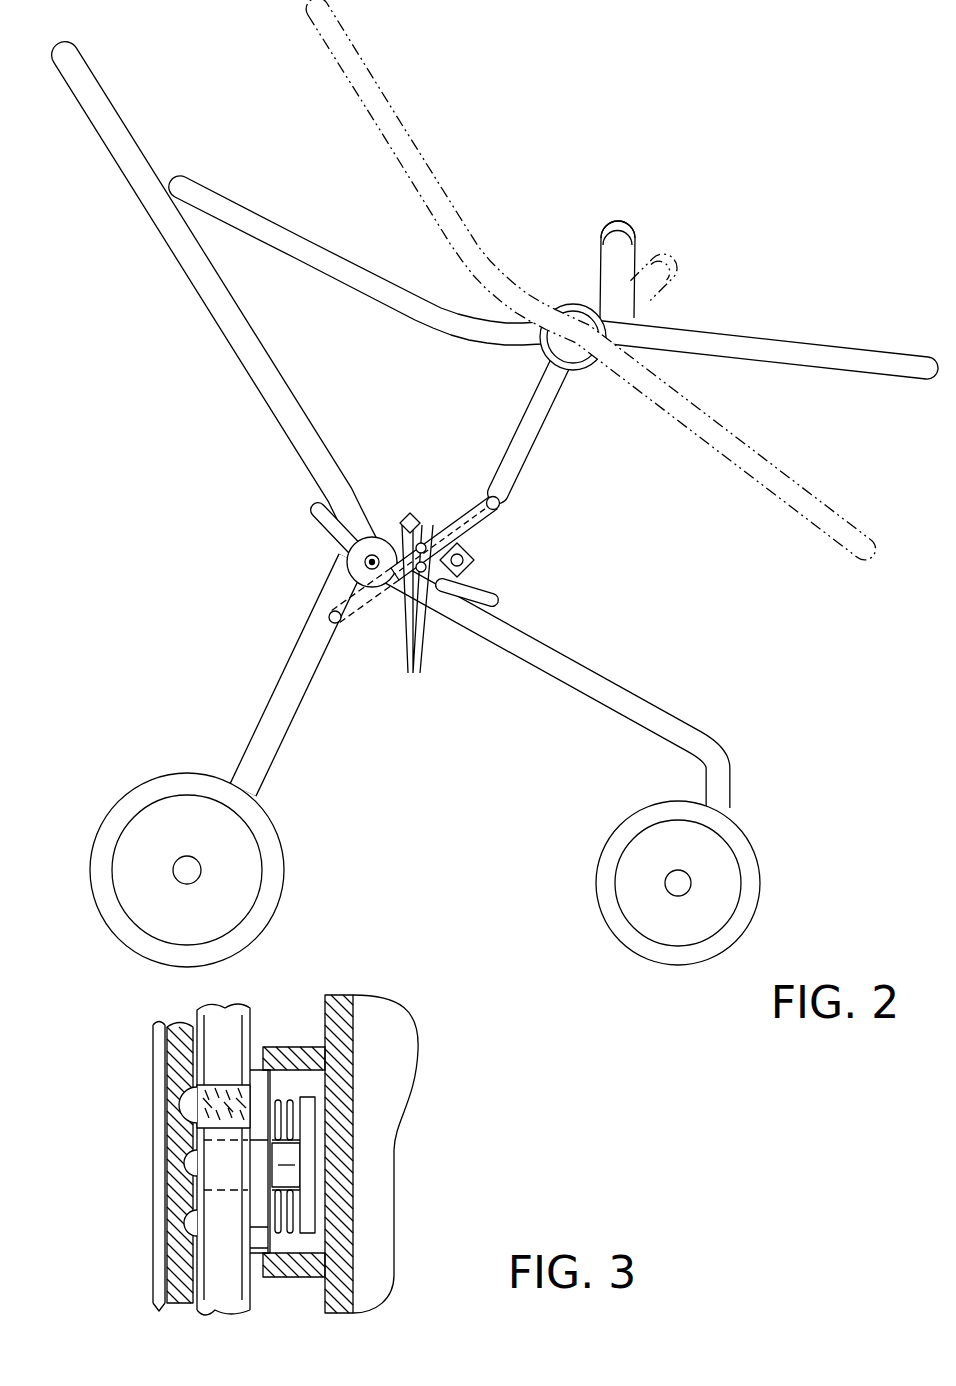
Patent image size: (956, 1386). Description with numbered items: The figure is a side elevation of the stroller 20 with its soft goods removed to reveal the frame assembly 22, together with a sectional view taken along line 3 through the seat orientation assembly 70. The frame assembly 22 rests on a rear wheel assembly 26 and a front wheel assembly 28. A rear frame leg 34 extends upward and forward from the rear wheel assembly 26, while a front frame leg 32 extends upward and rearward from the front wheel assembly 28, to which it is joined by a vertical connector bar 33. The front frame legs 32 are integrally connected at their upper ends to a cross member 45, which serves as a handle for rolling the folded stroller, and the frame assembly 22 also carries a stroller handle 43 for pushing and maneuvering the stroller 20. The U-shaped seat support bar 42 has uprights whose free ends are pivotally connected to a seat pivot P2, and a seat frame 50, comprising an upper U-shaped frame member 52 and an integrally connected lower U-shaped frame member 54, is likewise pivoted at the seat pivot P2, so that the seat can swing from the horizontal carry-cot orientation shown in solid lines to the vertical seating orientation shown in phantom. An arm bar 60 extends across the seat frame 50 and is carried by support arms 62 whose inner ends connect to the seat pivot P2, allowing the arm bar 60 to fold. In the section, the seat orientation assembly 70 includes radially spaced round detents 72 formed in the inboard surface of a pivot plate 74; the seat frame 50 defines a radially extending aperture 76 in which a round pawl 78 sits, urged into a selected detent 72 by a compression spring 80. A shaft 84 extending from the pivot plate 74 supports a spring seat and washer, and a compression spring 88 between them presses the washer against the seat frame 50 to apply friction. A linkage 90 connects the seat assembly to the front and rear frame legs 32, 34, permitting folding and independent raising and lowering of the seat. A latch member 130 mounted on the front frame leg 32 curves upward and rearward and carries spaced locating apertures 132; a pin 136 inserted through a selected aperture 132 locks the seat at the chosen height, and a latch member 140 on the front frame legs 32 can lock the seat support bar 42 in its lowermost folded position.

In FIG. 2, the stroller 20 is at (510, 483).
In FIG. 2, the frame assembly 22 is at (464, 572).
In FIG. 2, the rear wheel assembly 26 is at (135, 790).
In FIG. 2, the front wheel assembly 28 is at (762, 892).
In FIG. 2, the front frame leg 32 is at (578, 648).
In FIG. 2, the vertical connector bar 33 is at (728, 735).
In FIG. 2, the rear frame leg 34 is at (262, 708).
In FIG. 2, the section line 3- 3 is at (605, 281).
In FIG. 2, the seat support bar 42 is at (560, 420).
In FIG. 3, the seat support bar 42 is at (352, 1178).
In FIG. 2, the stroller handle 43 is at (215, 300).
In FIG. 2, the cross member 45 is at (318, 515).
In FIG. 2, the seat frame 50 is at (582, 282).
In FIG. 3, the seat frame 50 is at (205, 1312).
In FIG. 2, the upper U-shaped frame member 52 is at (232, 198).
In FIG. 2, the lower U-shaped frame member 54 is at (866, 350).
In FIG. 2, the arm bar 60 is at (620, 213).
In FIG. 2, the support arm 62 is at (638, 253).
In FIG. 3, the seat orientation assembly 70 is at (291, 1149).
In FIG. 3, the detent 72 is at (178, 1160).
In FIG. 3, the pivot plate 74 is at (178, 1228).
In FIG. 3, the aperture 76 is at (232, 1095).
In FIG. 3, the pawl 78 is at (180, 1112).
In FIG. 3, the compression spring 80 is at (180, 1141).
In FIG. 3, the shaft 84 is at (290, 1238).
In FIG. 3, the compression spring 88 is at (300, 1220).
In FIG. 2, the linkage 90 is at (361, 631).
In FIG. 2, the latch member 130 is at (405, 545).
In FIG. 2, the locating apertures 132 is at (422, 648).
In FIG. 2, the pin 136 is at (417, 520).
In FIG. 2, the latch member 140 is at (470, 582).
In FIG. 2, the seat pivot P2 is at (578, 308).
In FIG. 3, the seat pivot P2 is at (111, 1083).